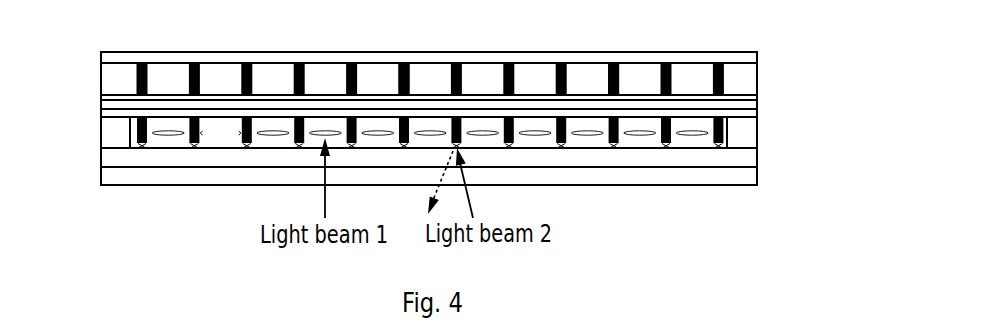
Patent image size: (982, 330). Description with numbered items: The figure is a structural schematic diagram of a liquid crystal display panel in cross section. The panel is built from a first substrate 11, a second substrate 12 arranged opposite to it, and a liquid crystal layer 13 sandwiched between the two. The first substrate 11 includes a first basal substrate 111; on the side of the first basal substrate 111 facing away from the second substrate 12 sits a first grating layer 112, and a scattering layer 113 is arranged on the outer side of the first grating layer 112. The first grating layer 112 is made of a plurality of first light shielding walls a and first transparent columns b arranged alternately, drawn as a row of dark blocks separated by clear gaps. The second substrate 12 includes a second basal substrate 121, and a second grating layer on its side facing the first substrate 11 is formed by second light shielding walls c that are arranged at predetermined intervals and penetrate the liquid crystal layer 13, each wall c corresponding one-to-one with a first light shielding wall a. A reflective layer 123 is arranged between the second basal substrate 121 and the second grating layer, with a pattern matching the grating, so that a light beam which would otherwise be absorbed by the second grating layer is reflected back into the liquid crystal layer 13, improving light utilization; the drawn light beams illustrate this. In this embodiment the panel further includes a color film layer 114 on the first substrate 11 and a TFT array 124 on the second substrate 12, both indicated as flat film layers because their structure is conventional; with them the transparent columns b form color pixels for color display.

The first substrate 11 is at (428, 76).
The second substrate 12 is at (434, 181).
The liquid crystal layer 13 is at (705, 142).
The first basal substrate 111 is at (117, 107).
The first grating layer 112 is at (115, 85).
The scattering layer 113 is at (115, 56).
The color film layer 114 is at (113, 117).
The second basal substrate 121 is at (110, 177).
The reflective layer 123 is at (558, 150).
The TFT array 124 is at (172, 160).
The first light shielding walls a is at (612, 72).
The first transparent columns b is at (393, 72).
The second light shielding walls c is at (665, 150).